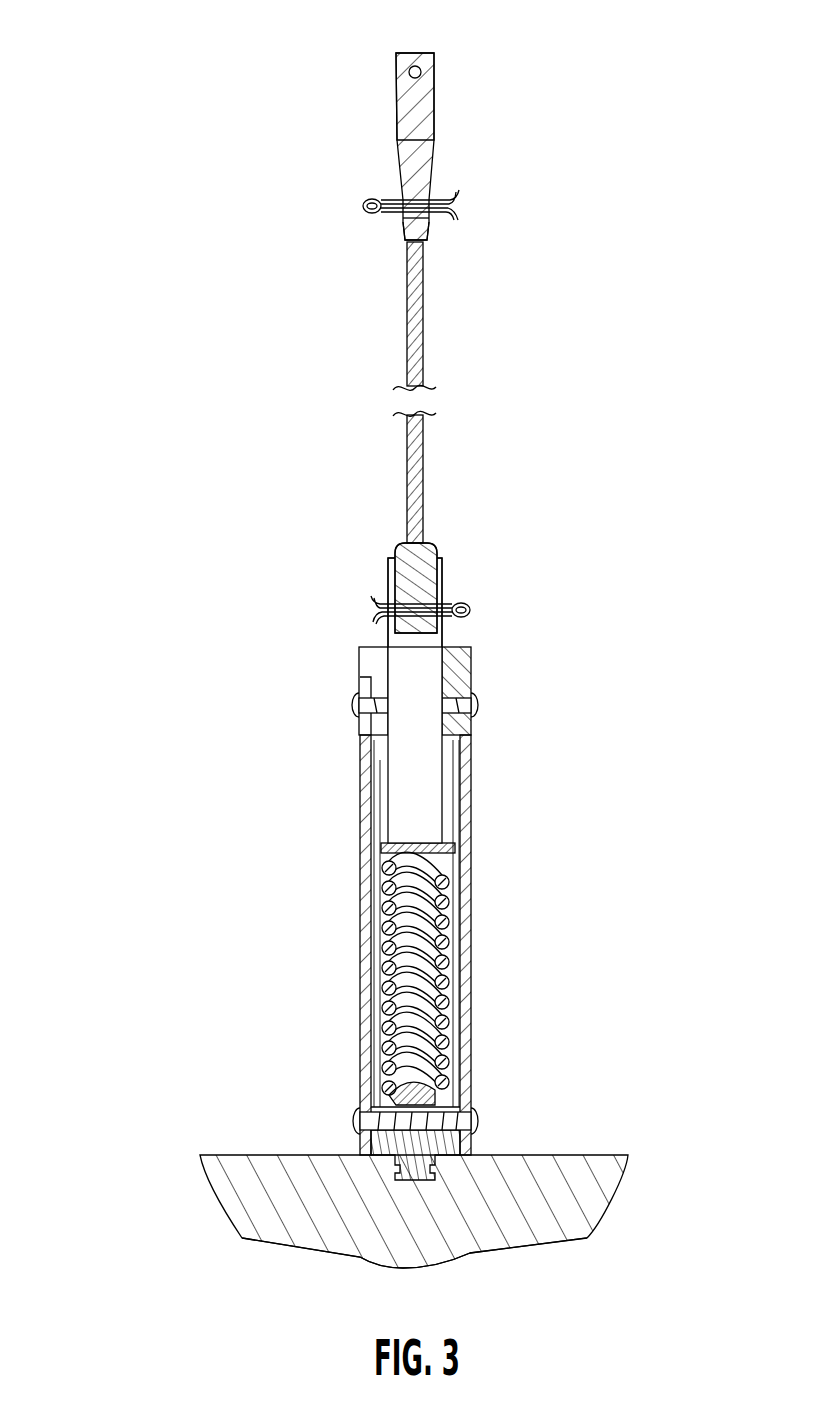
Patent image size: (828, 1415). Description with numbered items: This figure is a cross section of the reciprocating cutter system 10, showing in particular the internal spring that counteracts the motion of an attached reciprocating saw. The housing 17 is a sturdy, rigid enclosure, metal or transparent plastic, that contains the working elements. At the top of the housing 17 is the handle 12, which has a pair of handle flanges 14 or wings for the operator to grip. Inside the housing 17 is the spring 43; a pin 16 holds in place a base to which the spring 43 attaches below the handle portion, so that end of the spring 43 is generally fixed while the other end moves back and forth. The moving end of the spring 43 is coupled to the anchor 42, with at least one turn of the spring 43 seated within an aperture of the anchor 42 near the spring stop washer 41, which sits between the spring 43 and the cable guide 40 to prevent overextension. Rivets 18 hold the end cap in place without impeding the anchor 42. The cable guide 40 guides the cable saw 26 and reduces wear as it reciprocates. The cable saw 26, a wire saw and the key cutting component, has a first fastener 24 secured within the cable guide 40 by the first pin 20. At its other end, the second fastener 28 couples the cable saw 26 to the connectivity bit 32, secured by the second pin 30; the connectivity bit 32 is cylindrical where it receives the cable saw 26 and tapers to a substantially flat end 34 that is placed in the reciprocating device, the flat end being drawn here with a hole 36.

The reciprocating cutter system 10 is at (165, 578).
The handle 12 is at (430, 1236).
The handle flanges 14 is at (583, 1205).
The pin 16 is at (355, 1120).
The housing 17 is at (472, 870).
The rivets 18 is at (353, 705).
The first pin 20 is at (464, 604).
The first fastener 24 is at (428, 546).
The cable saw 26 is at (421, 341).
The second fastener 28 is at (420, 232).
The second pin 30 is at (362, 202).
The connectivity bit 32 is at (420, 175).
The substantially flat end 34 is at (413, 101).
The hole 36 is at (418, 66).
The cable guide 40 is at (388, 580).
The spring stop washer 41 is at (383, 849).
The anchor 42 is at (430, 766).
The spring 43 is at (447, 928).